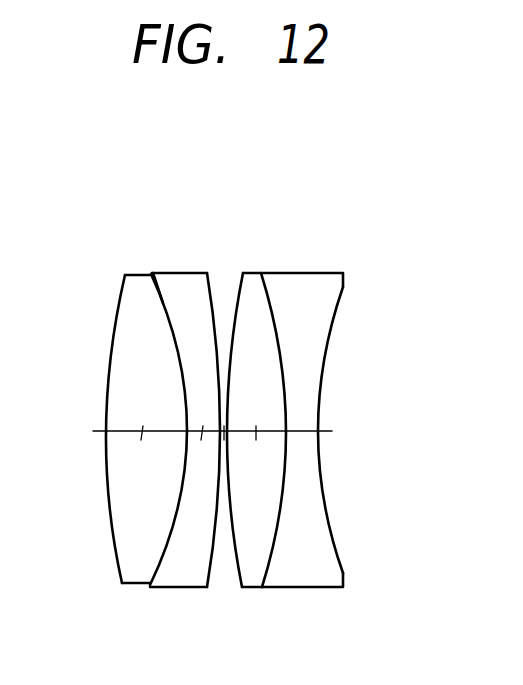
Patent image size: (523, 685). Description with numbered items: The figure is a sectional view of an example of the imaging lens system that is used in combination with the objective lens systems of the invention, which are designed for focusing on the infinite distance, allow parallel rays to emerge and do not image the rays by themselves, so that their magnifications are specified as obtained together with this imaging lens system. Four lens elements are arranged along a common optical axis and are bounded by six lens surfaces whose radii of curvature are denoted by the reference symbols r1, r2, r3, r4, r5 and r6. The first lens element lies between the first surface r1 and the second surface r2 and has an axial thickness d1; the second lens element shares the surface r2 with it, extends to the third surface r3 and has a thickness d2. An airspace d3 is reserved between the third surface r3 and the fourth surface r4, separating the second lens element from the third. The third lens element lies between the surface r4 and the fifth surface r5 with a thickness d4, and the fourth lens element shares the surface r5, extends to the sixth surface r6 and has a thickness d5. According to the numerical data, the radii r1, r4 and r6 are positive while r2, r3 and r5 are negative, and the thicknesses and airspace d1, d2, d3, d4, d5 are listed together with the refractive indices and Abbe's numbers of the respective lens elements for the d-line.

The radius of curvature of first lens surface r1 is at (120, 308).
The radius of curvature of second lens surface r2 is at (160, 302).
The radius of curvature of third lens surface r3 is at (212, 292).
The radius of curvature of fourth lens surface r4 is at (240, 290).
The radius of curvature of fifth lens surface r5 is at (271, 310).
The radius of curvature of sixth lens surface r6 is at (341, 300).
The thickness of first lens element d1 is at (143, 426).
The thickness of second lens element d2 is at (203, 426).
The airspace between second and third lens elements d3 is at (224, 426).
The thickness of third lens element d4 is at (256, 426).
The thickness of fourth lens element d5 is at (318, 426).